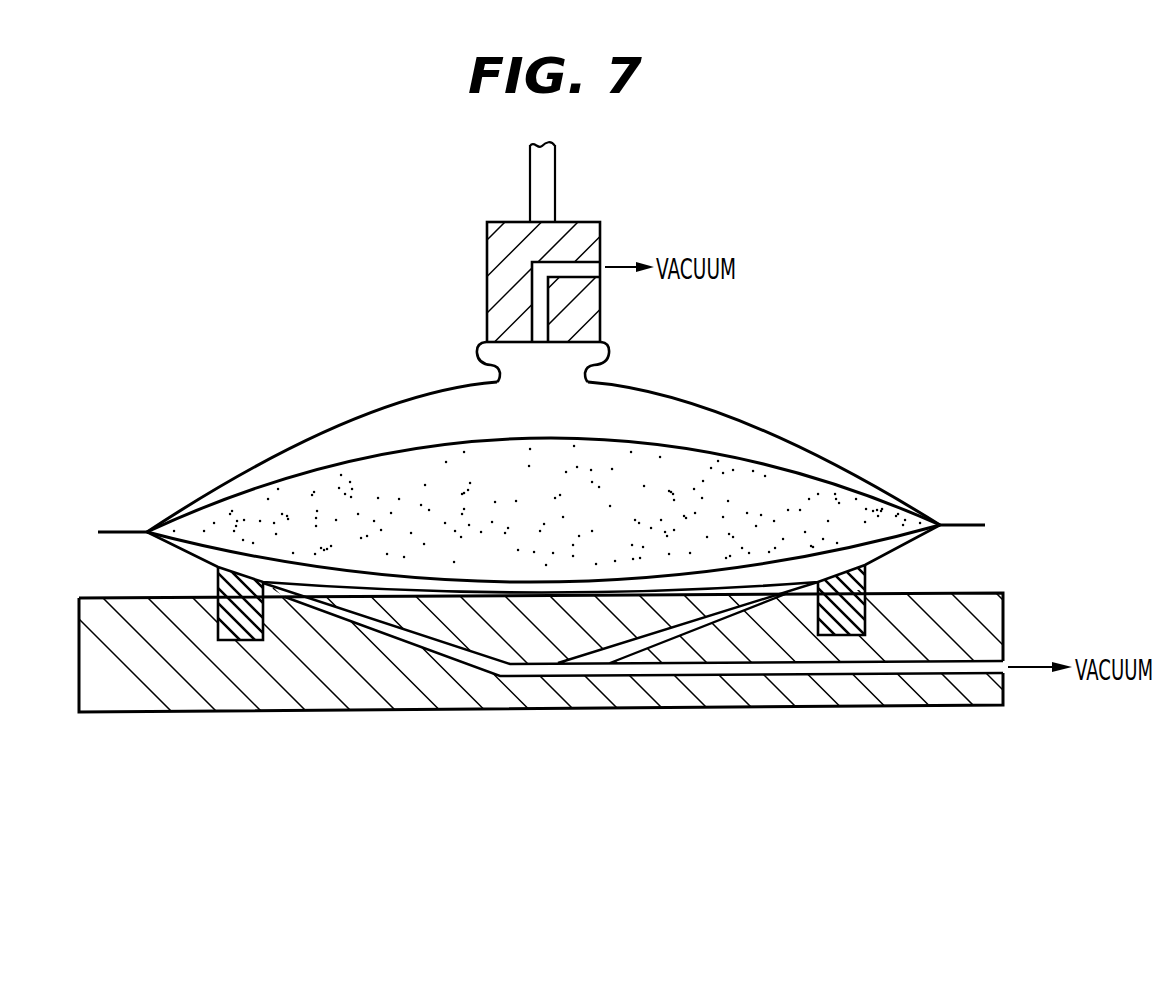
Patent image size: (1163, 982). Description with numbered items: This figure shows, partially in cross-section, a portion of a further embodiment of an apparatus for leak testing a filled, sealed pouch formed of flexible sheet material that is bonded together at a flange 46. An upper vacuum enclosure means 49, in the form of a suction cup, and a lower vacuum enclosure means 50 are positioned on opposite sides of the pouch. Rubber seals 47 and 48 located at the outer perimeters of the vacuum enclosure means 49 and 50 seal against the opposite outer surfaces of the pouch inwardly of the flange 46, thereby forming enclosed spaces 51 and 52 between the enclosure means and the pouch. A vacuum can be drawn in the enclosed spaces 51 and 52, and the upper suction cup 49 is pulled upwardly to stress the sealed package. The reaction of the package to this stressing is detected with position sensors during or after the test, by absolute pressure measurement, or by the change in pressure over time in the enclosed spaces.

The flange 46 is at (118, 529).
The rubber seal 47 is at (858, 478).
The rubber seal 48 is at (890, 552).
The vacuum enclosure means 49 is at (600, 381).
The vacuum enclosure means 50 is at (393, 598).
The enclosed space 51 is at (397, 402).
The enclosed space 52 is at (315, 580).